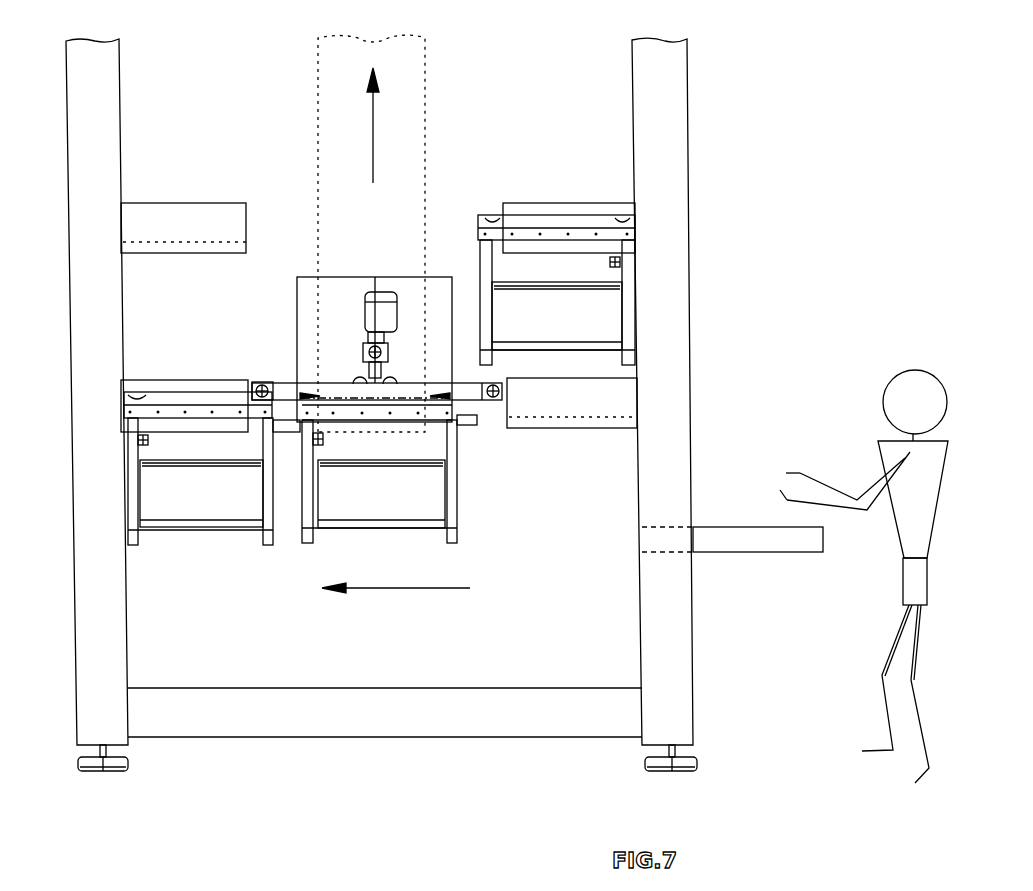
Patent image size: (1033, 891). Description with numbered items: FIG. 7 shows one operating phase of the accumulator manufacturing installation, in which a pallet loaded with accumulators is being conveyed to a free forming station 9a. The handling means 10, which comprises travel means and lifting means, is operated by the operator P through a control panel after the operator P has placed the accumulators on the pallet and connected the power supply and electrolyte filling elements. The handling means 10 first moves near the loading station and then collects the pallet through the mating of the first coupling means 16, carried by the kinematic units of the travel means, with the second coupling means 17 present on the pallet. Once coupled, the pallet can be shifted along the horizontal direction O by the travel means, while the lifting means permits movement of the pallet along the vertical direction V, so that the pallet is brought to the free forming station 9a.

The free forming station 9a is at (176, 306).
The handling means 10 is at (277, 573).
The first coupling means 16 is at (304, 380).
The second coupling means 17 is at (307, 410).
The vertical direction V is at (381, 125).
The horizontal direction O is at (396, 609).
The operator P is at (903, 445).